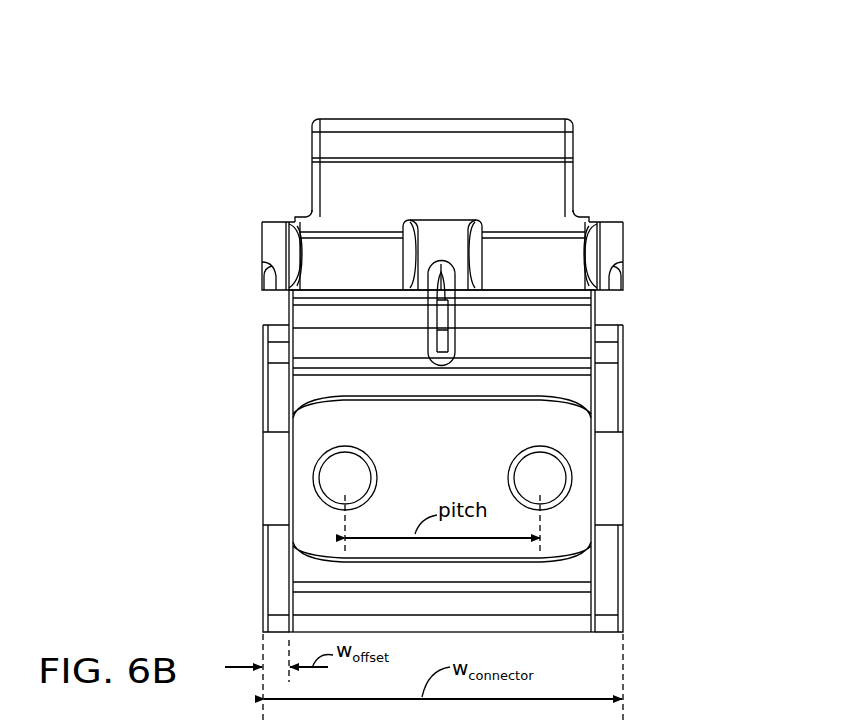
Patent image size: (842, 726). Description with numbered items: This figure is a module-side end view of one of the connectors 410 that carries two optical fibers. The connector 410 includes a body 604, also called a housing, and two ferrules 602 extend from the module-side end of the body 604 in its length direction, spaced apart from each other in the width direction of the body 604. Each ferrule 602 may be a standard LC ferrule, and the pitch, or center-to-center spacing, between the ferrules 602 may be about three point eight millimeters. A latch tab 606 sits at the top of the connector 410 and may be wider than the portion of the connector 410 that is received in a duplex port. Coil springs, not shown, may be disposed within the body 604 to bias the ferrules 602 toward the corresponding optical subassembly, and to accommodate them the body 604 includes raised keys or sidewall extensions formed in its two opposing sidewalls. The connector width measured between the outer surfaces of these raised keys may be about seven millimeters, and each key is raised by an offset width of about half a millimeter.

The connector 410 is at (259, 124).
The latch tab 606 is at (469, 117).
The body 604 is at (626, 345).
The ferrules 602 is at (512, 456).